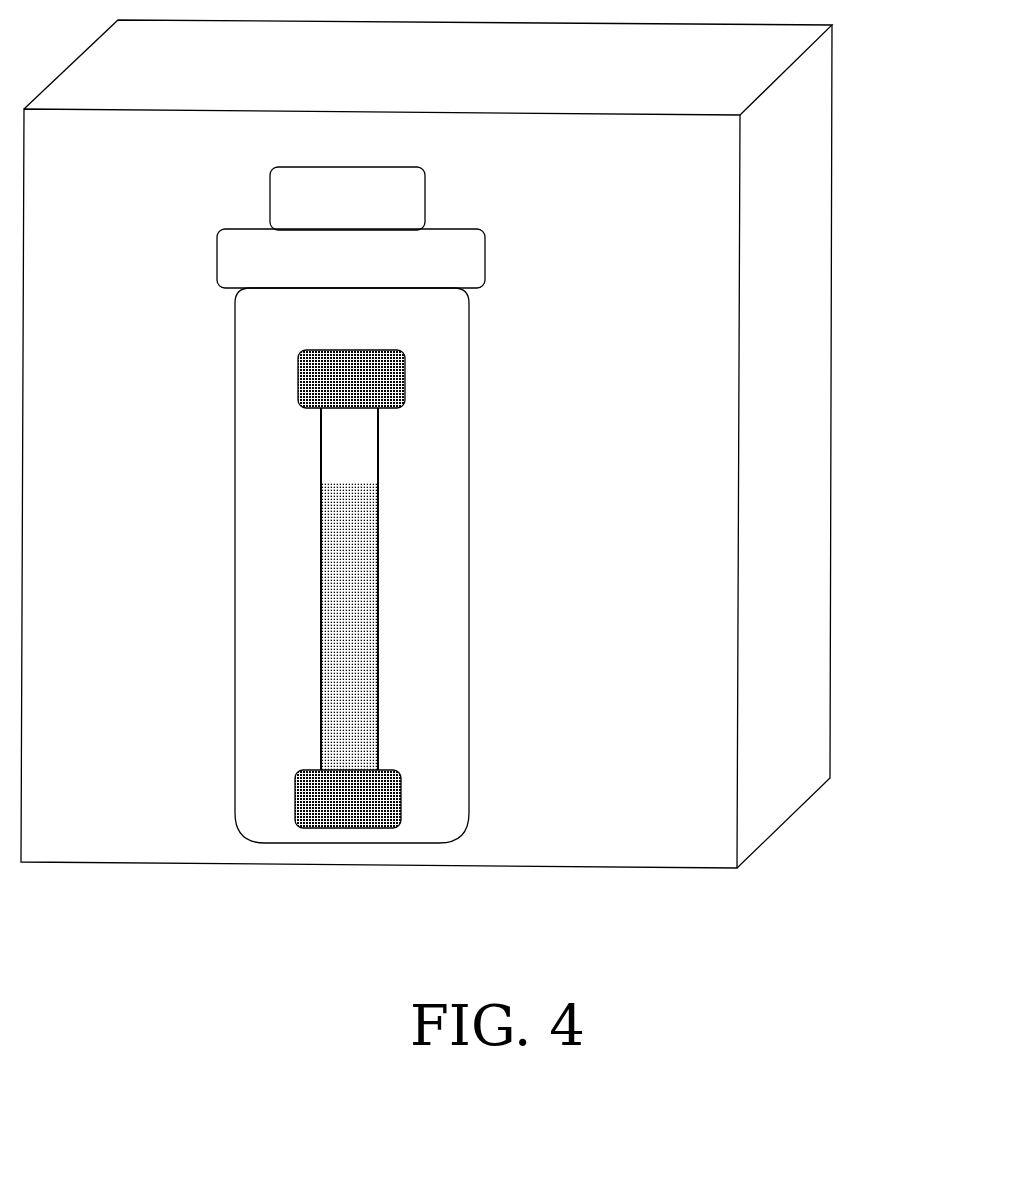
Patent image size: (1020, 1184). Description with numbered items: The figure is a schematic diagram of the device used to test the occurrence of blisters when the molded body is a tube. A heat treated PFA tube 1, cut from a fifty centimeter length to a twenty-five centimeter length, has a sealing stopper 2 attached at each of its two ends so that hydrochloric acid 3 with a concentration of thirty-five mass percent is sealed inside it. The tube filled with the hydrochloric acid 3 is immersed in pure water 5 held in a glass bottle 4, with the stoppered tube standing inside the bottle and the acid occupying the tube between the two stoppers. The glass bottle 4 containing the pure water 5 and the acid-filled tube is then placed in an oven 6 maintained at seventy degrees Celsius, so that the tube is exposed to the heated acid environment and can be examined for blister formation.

The heat treated PFA tube 1 is at (383, 620).
The sealing stopper 2 is at (405, 370).
The 35 mass % hydrochloric acid solution 3 is at (362, 550).
The glass bottle 4 is at (441, 210).
The pure water 5 is at (426, 691).
The oven 6 is at (797, 157).